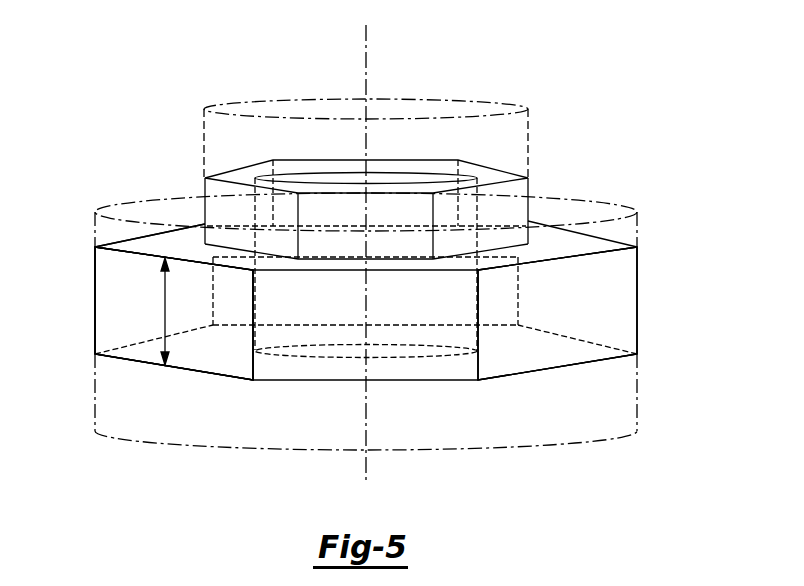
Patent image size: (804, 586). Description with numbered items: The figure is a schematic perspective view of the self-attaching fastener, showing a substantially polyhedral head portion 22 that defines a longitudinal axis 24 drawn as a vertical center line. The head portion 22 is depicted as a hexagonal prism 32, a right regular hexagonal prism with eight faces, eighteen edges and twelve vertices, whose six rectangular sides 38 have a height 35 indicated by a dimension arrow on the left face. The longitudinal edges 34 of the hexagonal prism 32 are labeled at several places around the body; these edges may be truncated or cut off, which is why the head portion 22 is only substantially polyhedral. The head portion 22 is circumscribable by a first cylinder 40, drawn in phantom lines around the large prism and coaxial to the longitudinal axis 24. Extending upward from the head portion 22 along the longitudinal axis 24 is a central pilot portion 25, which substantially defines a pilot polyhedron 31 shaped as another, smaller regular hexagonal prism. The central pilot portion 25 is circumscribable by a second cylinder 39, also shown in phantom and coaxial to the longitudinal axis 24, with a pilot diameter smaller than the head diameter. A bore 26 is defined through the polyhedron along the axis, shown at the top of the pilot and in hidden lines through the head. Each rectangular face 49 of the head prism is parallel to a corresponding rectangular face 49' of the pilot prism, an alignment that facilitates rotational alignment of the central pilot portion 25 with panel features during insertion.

The head portion 22 is at (195, 372).
The longitudinal axis 24 is at (367, 52).
The central pilot portion 25 is at (310, 160).
The bore 26 is at (403, 174).
The pilot polyhedron 31 is at (347, 160).
The hexagonal prism 32 is at (523, 352).
The longitudinal edges 34 is at (95, 321).
The height 35 is at (160, 302).
The rectangular sides 38 is at (117, 335).
The second cylinder 39 is at (530, 119).
The first cylinder 40 is at (94, 397).
The rectangular face 49 is at (174, 343).
The rectangular face 49' is at (160, 181).